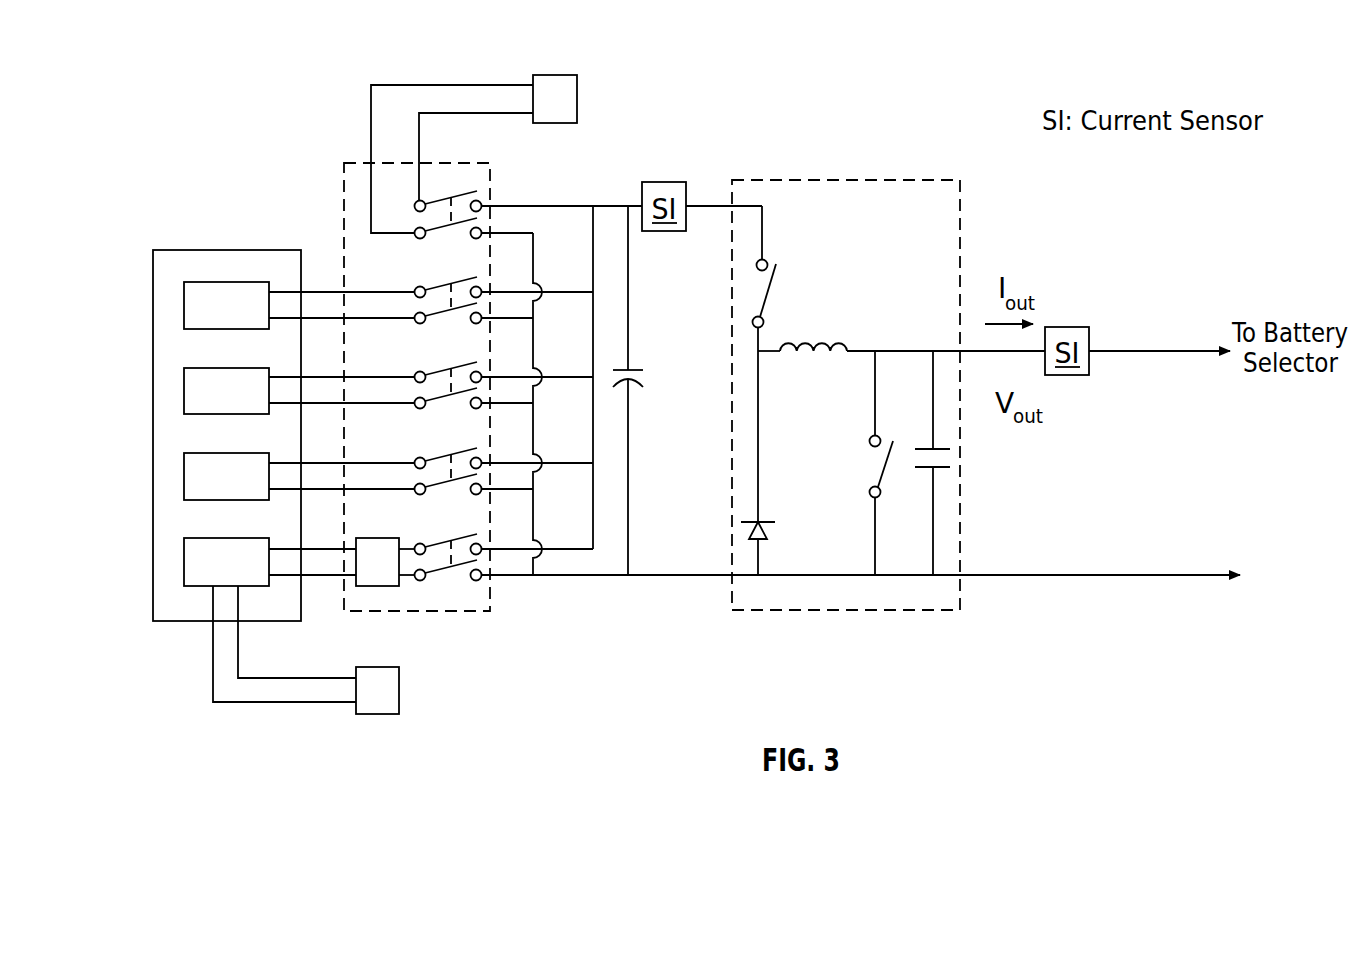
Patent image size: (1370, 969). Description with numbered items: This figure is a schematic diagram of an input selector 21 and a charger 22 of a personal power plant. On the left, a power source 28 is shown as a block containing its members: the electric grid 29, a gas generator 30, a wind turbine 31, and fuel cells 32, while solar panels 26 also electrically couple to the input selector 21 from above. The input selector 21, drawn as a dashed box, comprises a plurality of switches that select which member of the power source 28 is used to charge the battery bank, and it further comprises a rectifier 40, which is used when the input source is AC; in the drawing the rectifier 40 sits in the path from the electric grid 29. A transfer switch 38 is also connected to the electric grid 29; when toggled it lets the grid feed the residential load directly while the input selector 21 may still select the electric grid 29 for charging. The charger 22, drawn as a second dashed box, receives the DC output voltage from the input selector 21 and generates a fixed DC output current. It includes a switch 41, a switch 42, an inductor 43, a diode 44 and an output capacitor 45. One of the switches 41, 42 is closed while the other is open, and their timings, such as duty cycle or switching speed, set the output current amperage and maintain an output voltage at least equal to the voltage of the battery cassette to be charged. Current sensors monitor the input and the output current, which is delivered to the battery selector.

The input selector 21 is at (441, 163).
The charger 22 is at (916, 180).
The solar panels 26 is at (542, 115).
The power source 28 is at (198, 250).
The electric grid 29 is at (213, 577).
The gas generator 30 is at (213, 491).
The wind turbine 31 is at (213, 406).
The fuel cells 32 is at (213, 320).
The transfer switch 38 is at (390, 706).
The rectifier 40 is at (390, 577).
The switch 41 is at (771, 291).
The switch 42 is at (878, 478).
The inductor 43 is at (820, 343).
The diode 44 is at (767, 535).
The output capacitor 45 is at (947, 458).